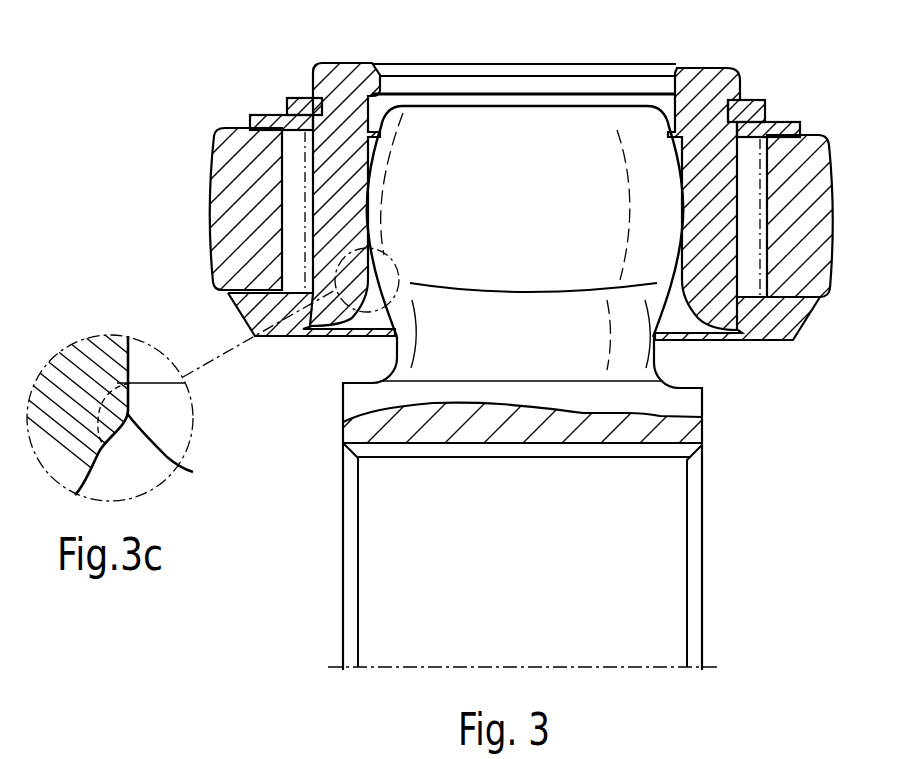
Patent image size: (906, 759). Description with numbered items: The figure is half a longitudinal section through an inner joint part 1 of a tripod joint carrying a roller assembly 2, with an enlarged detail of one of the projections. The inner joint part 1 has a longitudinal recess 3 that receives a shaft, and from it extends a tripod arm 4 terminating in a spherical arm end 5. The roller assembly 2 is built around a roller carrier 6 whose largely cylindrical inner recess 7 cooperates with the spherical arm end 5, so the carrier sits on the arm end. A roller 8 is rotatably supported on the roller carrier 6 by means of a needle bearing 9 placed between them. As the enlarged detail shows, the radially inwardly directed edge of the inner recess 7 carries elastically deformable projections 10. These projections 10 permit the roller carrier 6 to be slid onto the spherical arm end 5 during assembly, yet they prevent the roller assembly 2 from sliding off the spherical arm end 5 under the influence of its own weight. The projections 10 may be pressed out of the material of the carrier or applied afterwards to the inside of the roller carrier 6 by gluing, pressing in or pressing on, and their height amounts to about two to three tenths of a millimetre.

In FIG. 3, the inner joint part 1 is at (343, 435).
In FIG. 3, the roller assembly 2 is at (198, 103).
In FIG. 3, the longitudinal recess 3 is at (661, 463).
In FIG. 3, the tripod arm 4 is at (628, 350).
In FIG. 3, the spherical arm end 5 is at (393, 74).
In FIG. 3, the roller carrier 6 is at (717, 80).
In FIG. 3, the inner recess 7 is at (672, 132).
In FIG. 3, the roller 8 is at (797, 147).
In FIG. 3, the needle bearing 9 is at (748, 215).
In FIG. 3C, the elastically deformable projections 10 is at (193, 472).